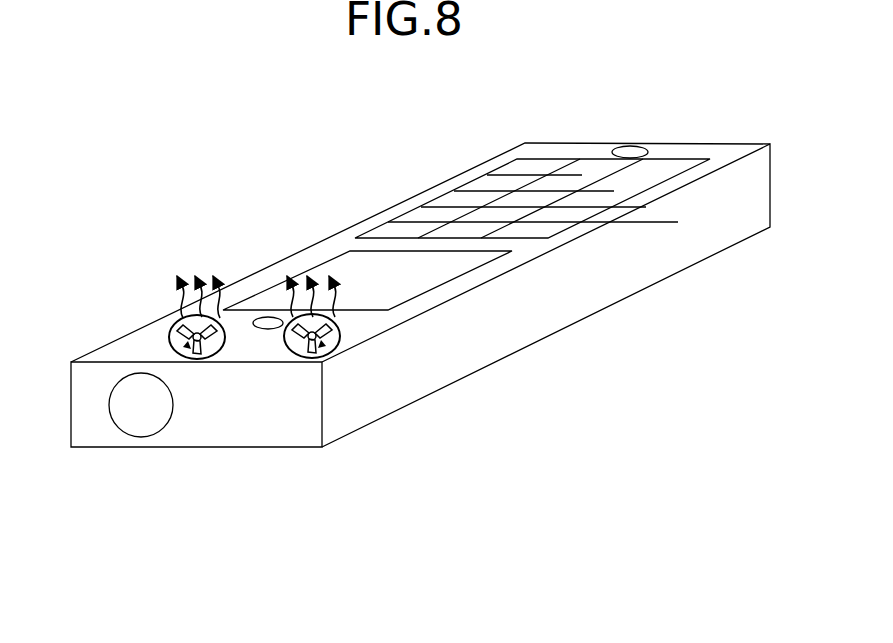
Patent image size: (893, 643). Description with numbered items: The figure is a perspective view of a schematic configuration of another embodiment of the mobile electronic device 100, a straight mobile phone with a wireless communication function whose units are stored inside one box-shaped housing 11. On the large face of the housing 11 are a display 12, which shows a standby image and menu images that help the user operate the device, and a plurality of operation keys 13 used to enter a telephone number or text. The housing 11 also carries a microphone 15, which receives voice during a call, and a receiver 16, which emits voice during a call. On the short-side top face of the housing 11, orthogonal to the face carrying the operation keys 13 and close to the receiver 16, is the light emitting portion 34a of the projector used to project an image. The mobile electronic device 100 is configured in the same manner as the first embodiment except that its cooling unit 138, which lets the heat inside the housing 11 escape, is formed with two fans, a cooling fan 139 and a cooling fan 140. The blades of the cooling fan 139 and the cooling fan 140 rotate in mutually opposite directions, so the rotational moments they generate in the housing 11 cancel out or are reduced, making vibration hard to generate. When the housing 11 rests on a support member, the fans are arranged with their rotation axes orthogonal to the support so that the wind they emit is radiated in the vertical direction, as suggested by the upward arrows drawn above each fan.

The mobile electronic device 100 is at (254, 158).
The housing 11 is at (570, 309).
The display 12 is at (352, 263).
The operation keys 13 is at (665, 165).
The microphone 15 is at (628, 148).
The receiver 16 is at (268, 320).
The light emitting portion 34a is at (141, 405).
The cooling unit 138 is at (86, 243).
The cooling fan 139 is at (173, 327).
The cooling fan 140 is at (297, 348).